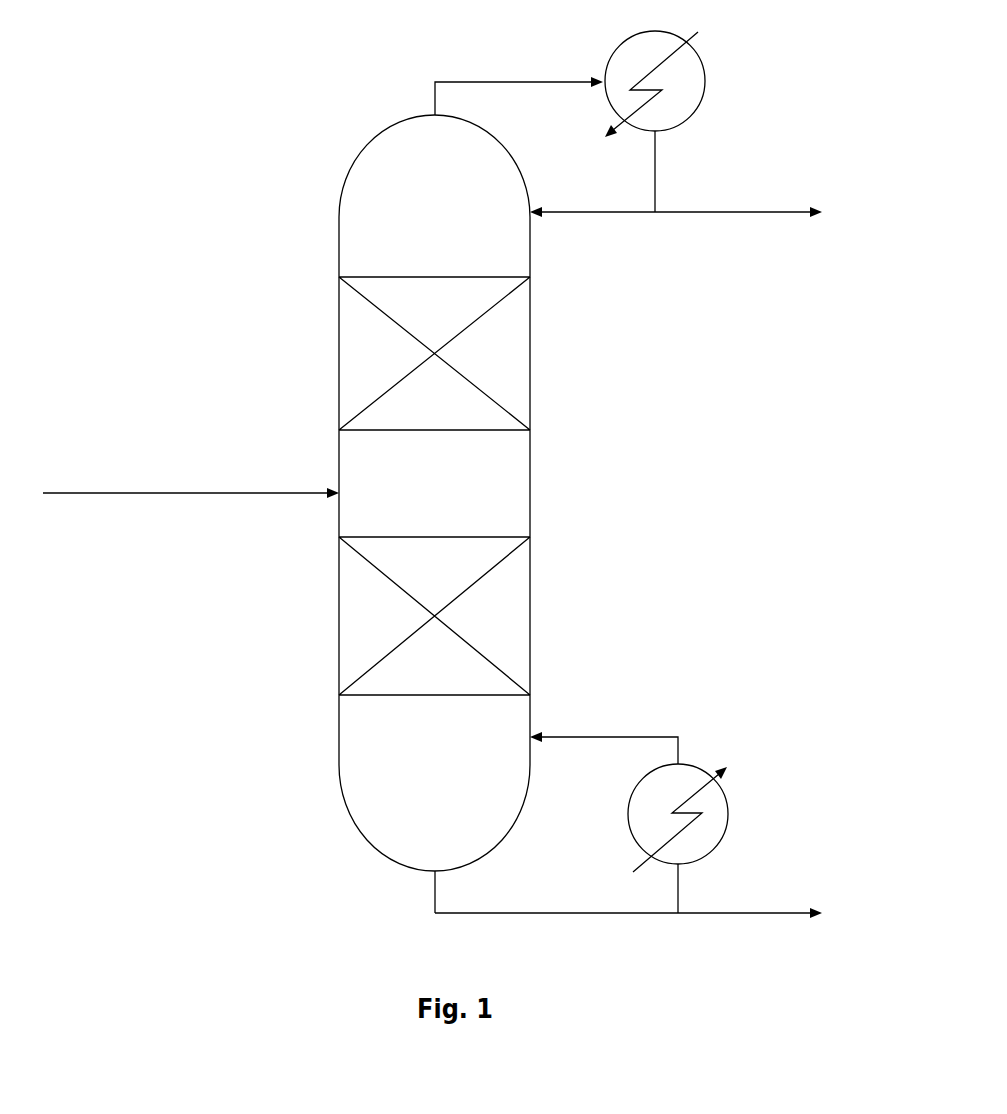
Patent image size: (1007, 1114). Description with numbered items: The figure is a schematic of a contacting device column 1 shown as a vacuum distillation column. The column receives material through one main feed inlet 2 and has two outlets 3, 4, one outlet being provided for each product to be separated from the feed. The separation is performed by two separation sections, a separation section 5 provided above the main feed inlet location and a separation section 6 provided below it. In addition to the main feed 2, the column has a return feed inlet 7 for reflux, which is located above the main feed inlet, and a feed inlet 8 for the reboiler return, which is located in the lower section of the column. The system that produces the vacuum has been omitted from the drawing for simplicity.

The contacting device column 1 is at (285, 229).
The main feed inlet 2 is at (207, 493).
The outlet 3 is at (758, 212).
The outlet 4 is at (783, 913).
The separation section 5 is at (362, 337).
The separation section 6 is at (362, 653).
The return feed inlet 7 is at (561, 212).
The feed inlet 8 is at (631, 736).